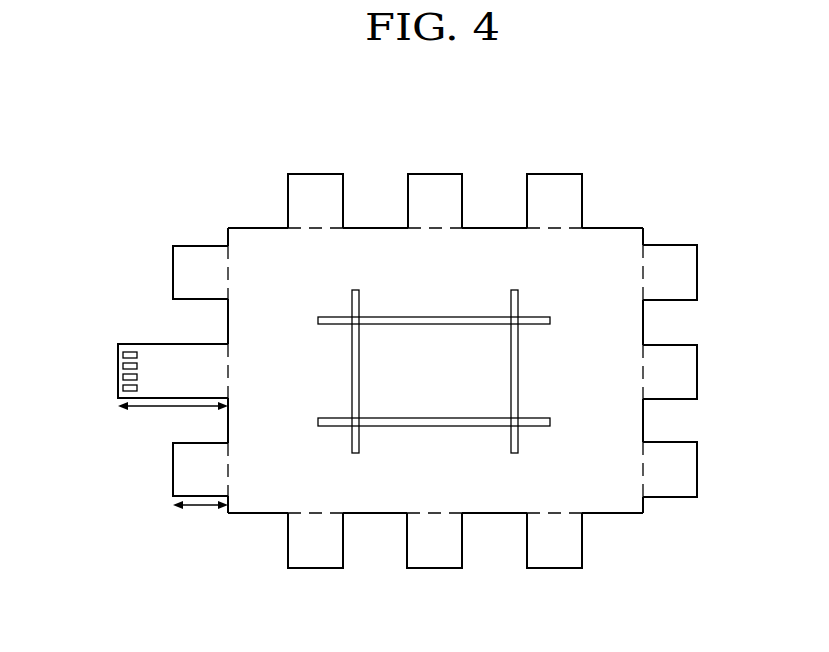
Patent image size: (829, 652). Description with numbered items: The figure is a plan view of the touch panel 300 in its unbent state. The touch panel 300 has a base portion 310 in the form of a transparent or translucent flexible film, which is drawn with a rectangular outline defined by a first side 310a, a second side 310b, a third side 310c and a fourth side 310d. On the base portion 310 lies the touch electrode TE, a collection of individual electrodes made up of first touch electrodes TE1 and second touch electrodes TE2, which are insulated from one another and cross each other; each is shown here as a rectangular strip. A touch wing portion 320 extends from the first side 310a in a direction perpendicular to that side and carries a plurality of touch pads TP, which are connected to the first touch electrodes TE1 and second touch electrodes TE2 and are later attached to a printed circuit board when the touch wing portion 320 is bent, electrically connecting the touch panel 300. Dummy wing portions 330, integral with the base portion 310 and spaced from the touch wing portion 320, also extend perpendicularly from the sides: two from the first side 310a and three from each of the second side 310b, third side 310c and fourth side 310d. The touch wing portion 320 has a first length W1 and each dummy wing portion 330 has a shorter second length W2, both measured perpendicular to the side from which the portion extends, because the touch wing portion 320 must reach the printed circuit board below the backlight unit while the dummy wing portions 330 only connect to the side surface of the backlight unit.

The touch panel 300 is at (692, 104).
The base portion 310 is at (368, 240).
The first side 310a is at (228, 320).
The second side 310b is at (493, 228).
The third side 310c is at (643, 322).
The fourth side 310d is at (490, 515).
The touch wing portion 320 is at (118, 385).
The dummy wing portion 330 is at (315, 571).
The touch pad TP is at (122, 353).
The touch electrode TE is at (690, 160).
The first touch electrodes TE1 is at (536, 317).
The second touch electrodes TE2 is at (513, 290).
The first length W1 is at (173, 418).
The second length W2 is at (200, 517).